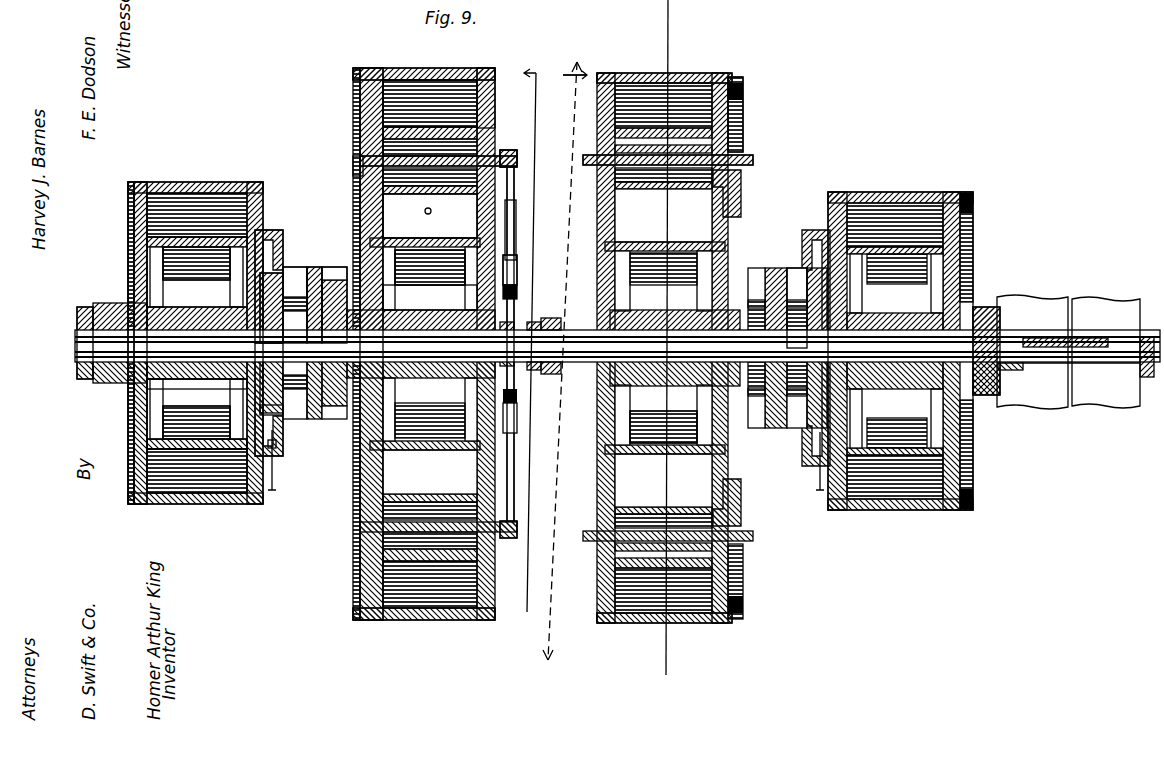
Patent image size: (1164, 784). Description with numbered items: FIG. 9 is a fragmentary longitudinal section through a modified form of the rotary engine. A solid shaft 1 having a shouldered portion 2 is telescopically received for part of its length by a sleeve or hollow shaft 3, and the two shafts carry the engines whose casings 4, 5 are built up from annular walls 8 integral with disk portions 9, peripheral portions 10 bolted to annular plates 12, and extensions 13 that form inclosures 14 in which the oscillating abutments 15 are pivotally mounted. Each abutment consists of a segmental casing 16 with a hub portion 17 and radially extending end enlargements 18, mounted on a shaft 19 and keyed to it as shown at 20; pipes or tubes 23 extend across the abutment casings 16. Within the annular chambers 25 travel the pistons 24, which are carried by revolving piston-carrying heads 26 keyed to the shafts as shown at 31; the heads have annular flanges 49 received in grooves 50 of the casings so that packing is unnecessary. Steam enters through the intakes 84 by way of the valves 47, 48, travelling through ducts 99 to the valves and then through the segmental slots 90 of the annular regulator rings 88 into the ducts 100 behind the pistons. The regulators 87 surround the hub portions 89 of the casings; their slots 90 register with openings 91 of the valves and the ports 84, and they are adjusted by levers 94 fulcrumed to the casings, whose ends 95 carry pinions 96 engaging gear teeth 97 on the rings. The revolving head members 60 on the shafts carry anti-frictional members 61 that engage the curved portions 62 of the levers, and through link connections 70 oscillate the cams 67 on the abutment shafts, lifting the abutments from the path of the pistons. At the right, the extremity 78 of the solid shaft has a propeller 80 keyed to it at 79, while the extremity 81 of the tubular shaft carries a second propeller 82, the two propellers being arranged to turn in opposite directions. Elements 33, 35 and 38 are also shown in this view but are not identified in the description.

The solid shaft 1 is at (975, 330).
The shouldered portion 2 is at (78, 340).
The sleeve or hollow shaft 3 is at (663, 411).
The casing 4 is at (258, 184).
The casing 5 is at (410, 70).
The annular walls 8 is at (430, 622).
The disk portions 9 is at (262, 500).
The peripheral portions 10 is at (133, 183).
The annular plates 12 is at (130, 225).
The extensions 13 is at (497, 113).
The casings or inclosures 14 is at (355, 115).
The oscillating abutments 15 is at (362, 185).
The segmental shaped casings 16 is at (355, 650).
The hub portion 17 is at (435, 95).
The radially extending end enlargements 18 is at (455, 100).
The shafts 19 is at (452, 170).
The key 20 is at (490, 112).
The pipes or tubes 23 is at (743, 98).
The pistons 24 is at (412, 223).
The chambers 25 is at (210, 220).
The piston-carrying heads 26 is at (905, 240).
The key 31 is at (110, 380).
The clutch gear 33 is at (330, 268).
The coupling 35 is at (545, 362).
The clutch member 38 is at (785, 272).
The valve 47 is at (283, 260).
The valve 48 is at (278, 428).
The annular flanges 49 is at (275, 240).
The annular recesses or grooves 50 is at (262, 230).
The revolving head members 60 is at (517, 292).
The anti-frictional members 61 is at (512, 265).
The segmental or curved portions 62 is at (512, 203).
The cams 67 is at (510, 158).
The link connections 70 is at (515, 215).
The extremity 78 is at (1150, 380).
The key 79 is at (1095, 300).
The propeller 80 is at (1105, 407).
The extremity 81 is at (1025, 405).
The propeller 82 is at (1025, 300).
The ports or intakes 84 is at (543, 339).
The regulators 87 is at (280, 290).
The annular rings 88 is at (212, 218).
The hub portions 89 is at (542, 368).
The segmental slots 90 is at (215, 460).
The openings 91 is at (770, 270).
The levers 94 is at (277, 478).
The ends 95 is at (277, 452).
The pinions or gears 96 is at (230, 450).
The gear teeth 97 is at (210, 470).
The ducts 99 is at (292, 272).
The ducts 100 is at (580, 344).